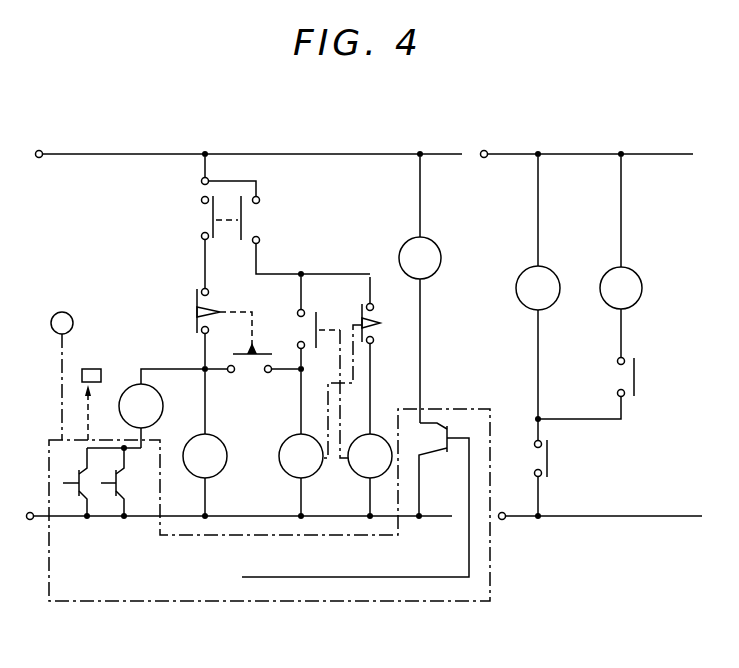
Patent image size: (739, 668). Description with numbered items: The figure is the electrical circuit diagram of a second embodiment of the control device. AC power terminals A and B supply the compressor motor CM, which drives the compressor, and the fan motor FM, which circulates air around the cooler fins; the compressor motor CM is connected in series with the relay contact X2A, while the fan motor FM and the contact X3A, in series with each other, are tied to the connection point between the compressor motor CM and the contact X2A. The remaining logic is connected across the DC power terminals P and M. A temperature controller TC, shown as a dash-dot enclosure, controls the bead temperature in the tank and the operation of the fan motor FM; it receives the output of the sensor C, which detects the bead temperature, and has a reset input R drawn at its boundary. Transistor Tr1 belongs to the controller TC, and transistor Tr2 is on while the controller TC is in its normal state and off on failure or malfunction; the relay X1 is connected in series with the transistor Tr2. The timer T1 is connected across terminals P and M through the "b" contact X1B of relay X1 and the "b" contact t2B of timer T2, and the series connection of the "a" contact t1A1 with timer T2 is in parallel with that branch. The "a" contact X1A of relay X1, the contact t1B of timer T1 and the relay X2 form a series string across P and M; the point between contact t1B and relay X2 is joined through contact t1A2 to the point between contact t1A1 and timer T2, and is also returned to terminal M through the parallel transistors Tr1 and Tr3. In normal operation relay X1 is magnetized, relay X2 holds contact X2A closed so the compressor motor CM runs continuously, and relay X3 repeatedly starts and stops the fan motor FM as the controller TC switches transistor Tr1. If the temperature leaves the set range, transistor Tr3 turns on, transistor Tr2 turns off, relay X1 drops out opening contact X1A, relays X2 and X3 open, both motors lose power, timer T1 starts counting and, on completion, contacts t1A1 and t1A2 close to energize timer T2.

The DC power terminal P is at (247, 143).
The AC power terminal A is at (585, 143).
The AC power terminal B is at (601, 531).
The DC power terminal M is at (234, 531).
The sensor C is at (62, 363).
The reset input R is at (91, 393).
The temperature controller TC is at (199, 603).
The relay X1 is at (420, 290).
The relay X2 is at (205, 444).
The relay X3 is at (162, 408).
The "a" contact of relay X1 X1A is at (209, 223).
The "b" contact of relay X1 X1B is at (305, 236).
The relay contact X2A is at (561, 478).
The contact X3A is at (607, 389).
The timer T1 is at (370, 475).
The timer T2 is at (301, 444).
The "a" contact of timer T1 t1A1 is at (323, 367).
The contact of timer T1 t1A2 is at (250, 387).
The contact of timer T1 t1B is at (234, 328).
The "b" contact of timer T2 t2B is at (364, 367).
The transistor Tr1 is at (95, 480).
The transistor Tr2 is at (355, 500).
The transistor Tr3 is at (127, 482).
The compressor motor CM is at (538, 299).
The fan motor FM is at (621, 257).